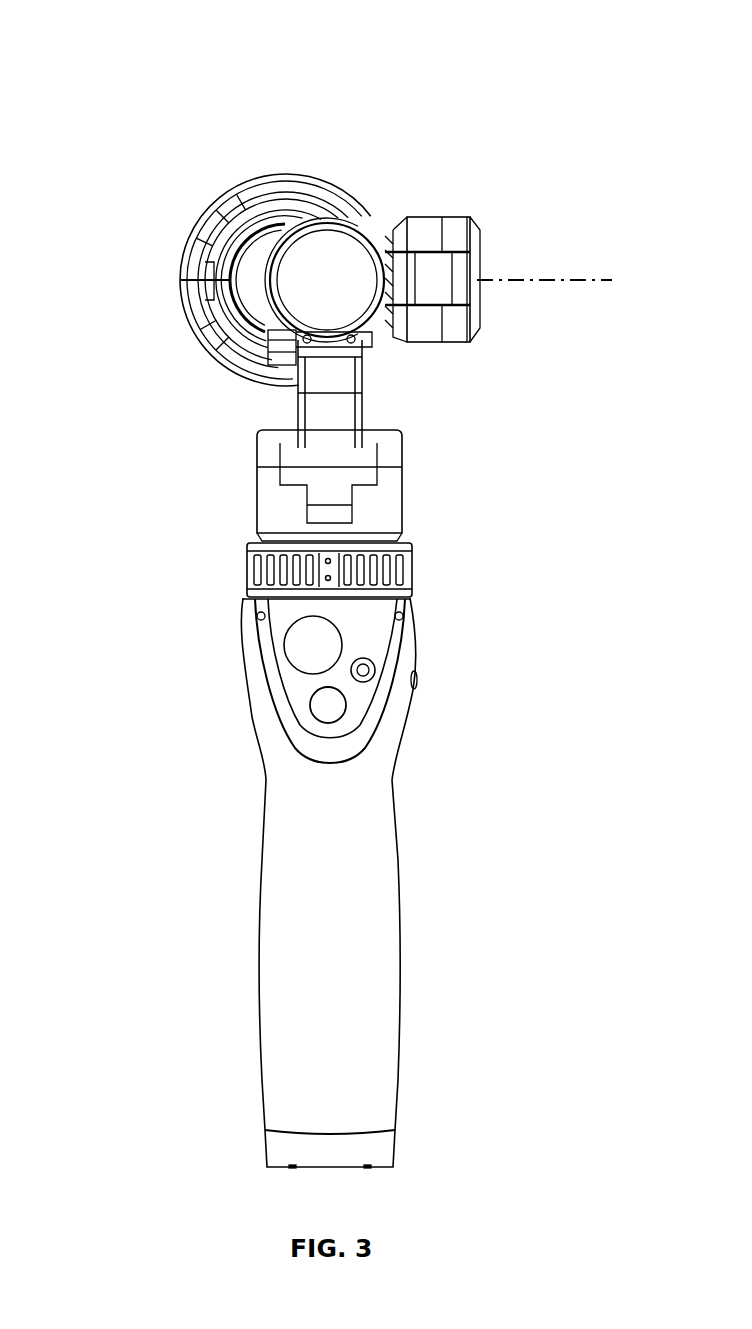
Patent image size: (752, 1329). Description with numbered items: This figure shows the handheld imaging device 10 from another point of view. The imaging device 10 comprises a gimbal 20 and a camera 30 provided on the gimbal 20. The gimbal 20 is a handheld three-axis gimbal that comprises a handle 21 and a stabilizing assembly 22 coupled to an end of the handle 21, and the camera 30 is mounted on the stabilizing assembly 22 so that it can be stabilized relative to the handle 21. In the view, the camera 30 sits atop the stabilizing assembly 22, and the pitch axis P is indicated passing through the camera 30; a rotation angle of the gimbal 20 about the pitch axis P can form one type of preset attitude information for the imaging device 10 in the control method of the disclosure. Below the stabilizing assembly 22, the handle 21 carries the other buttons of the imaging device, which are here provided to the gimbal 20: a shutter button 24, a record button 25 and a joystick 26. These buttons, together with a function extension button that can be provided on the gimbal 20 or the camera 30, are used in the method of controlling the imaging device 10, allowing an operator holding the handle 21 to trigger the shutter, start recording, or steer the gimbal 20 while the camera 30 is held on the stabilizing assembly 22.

The imaging device 10 is at (276, 62).
The gimbal 20 is at (132, 517).
The handle 21 is at (373, 995).
The stabilizing assembly 22 is at (387, 452).
The shutter button 24 is at (333, 712).
The record button 25 is at (363, 670).
The joystick 26 is at (302, 650).
The camera 30 is at (240, 205).
The pitch axis P is at (562, 281).